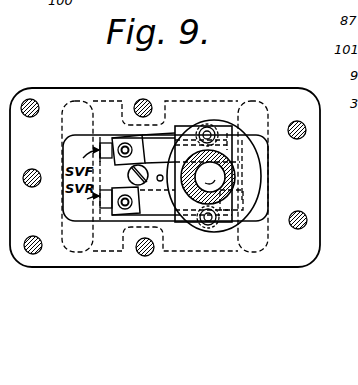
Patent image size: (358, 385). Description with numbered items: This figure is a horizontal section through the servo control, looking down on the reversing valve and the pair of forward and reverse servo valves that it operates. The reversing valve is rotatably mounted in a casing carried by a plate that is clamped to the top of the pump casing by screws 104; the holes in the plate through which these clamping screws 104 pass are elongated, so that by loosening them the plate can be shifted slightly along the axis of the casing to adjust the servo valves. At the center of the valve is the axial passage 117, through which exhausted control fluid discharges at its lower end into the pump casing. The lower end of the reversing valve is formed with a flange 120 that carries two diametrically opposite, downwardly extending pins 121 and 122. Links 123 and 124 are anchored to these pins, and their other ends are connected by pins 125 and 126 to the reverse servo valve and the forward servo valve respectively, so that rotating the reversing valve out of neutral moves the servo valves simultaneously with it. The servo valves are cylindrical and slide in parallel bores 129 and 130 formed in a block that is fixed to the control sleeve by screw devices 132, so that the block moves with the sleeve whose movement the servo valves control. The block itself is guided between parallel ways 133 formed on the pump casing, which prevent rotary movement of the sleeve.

The screws 104 is at (33, 237).
The axial passage 117 is at (210, 180).
The flange 120 is at (257, 172).
The pin 121 is at (210, 225).
The pin 122 is at (208, 127).
The link 123 is at (170, 217).
The link 124 is at (168, 143).
The pin 125 is at (123, 208).
The pin 126 is at (114, 137).
The bore 129 is at (270, 121).
The bore 130 is at (263, 196).
The screw devices 132 is at (143, 136).
The parallel ways 133 is at (110, 132).